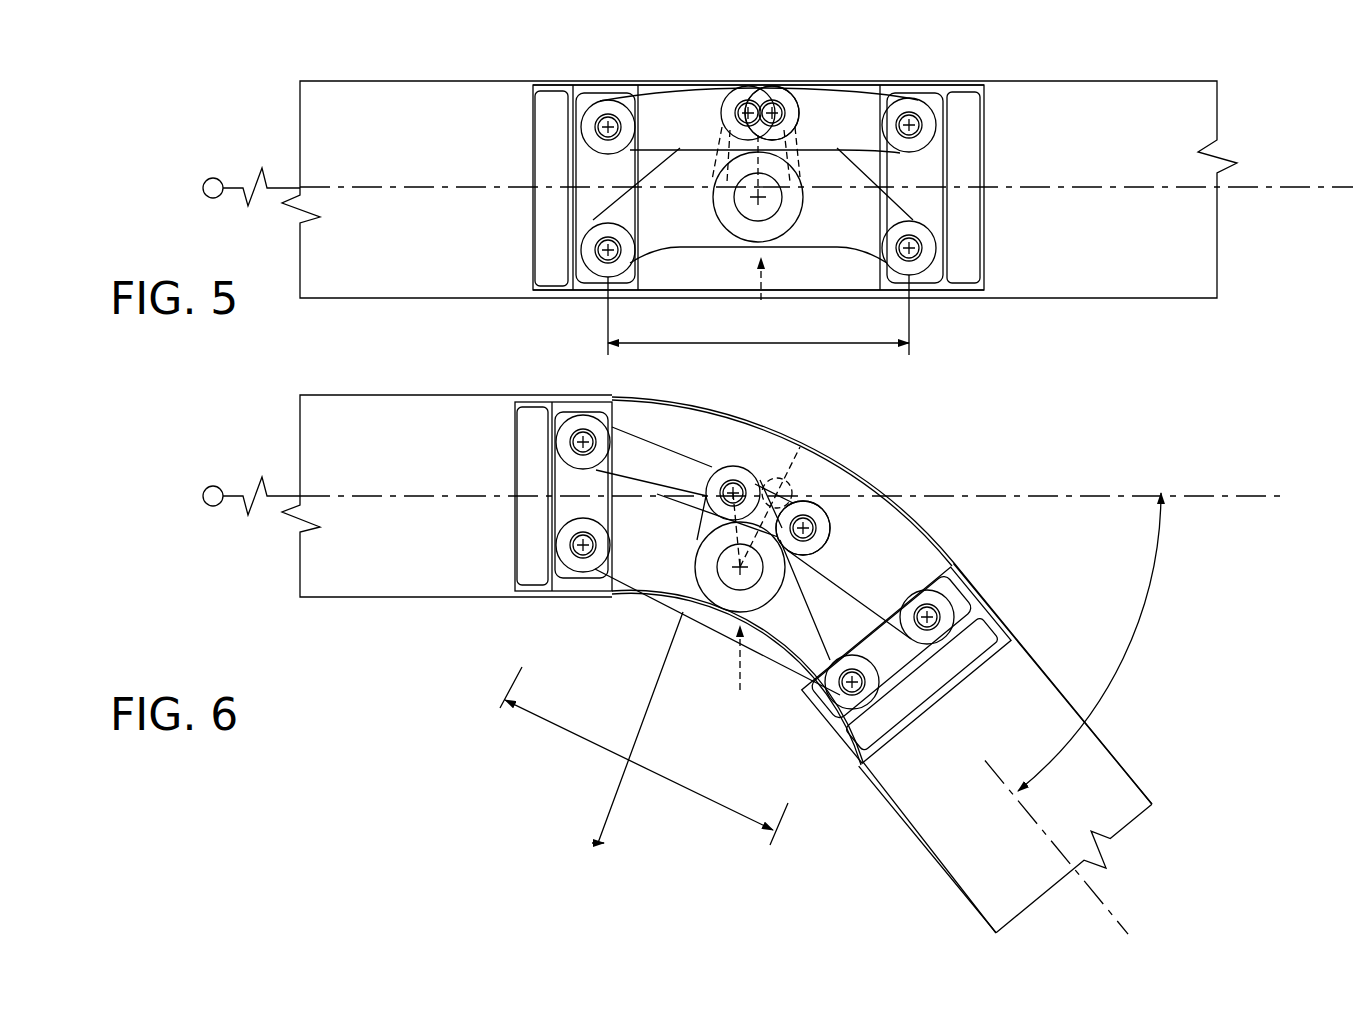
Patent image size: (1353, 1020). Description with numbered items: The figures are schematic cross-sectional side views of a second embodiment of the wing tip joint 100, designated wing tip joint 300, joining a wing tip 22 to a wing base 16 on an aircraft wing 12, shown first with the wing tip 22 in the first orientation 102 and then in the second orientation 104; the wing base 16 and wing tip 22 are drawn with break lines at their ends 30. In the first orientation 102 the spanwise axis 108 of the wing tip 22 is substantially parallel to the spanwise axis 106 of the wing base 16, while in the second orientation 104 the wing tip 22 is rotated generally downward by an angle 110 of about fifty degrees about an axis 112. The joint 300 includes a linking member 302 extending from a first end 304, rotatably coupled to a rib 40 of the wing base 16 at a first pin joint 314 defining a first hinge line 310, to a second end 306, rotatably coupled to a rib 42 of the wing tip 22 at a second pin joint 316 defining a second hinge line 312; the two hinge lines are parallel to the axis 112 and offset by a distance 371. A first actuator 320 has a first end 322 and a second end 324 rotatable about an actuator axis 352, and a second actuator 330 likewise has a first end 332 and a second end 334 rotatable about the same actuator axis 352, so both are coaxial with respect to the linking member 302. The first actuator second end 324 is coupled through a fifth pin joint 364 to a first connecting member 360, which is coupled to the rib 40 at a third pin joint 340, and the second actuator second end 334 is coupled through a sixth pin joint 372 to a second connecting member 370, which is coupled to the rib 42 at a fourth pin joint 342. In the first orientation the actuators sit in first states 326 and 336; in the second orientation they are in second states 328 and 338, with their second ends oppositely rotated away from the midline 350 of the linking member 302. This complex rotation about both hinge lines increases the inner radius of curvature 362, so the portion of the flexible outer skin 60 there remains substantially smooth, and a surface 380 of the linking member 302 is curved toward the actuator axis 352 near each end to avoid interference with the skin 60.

In FIG. 5, the tubular frame assembly 12 is at (283, 323).
In FIG. 6, the tubular frame assembly 12 is at (283, 623).
In FIG. 5, the wing base 16 is at (400, 80).
In FIG. 6, the wing base 16 is at (400, 395).
In FIG. 5, the wing tip 22 is at (1145, 80).
In FIG. 6, the wing tip 22 is at (1045, 680).
In FIG. 5, the tube end 30 is at (209, 178).
In FIG. 6, the tube end 30 is at (209, 486).
In FIG. 5, the rib 40 is at (640, 116).
In FIG. 6, the rib 40 is at (612, 412).
In FIG. 5, the rib 42 is at (872, 95).
In FIG. 6, the rib 42 is at (935, 567).
In FIG. 5, the flexible outer skin 60 is at (748, 82).
In FIG. 6, the flexible outer skin 60 is at (866, 484).
In FIG. 5, the wing tip joint 100 is at (766, 200).
In FIG. 6, the wing tip joint 100 is at (803, 650).
In FIG. 5, the first orientation 102 is at (1238, 325).
In FIG. 6, the second orientation 104 is at (1199, 771).
In FIG. 5, the spanwise axis 106 is at (410, 187).
In FIG. 6, the spanwise axis 106 is at (428, 495).
In FIG. 5, the spanwise axis 108 is at (1318, 187).
In FIG. 6, the spanwise axis 108 is at (1118, 913).
In FIG. 6, the angle 110 is at (1168, 515).
In FIG. 6, the axis 112 is at (786, 478).
In FIG. 5, the wing tip joint 300 is at (945, 58).
In FIG. 6, the wing tip joint 300 is at (560, 775).
In FIG. 5, the linking member 302 is at (703, 258).
In FIG. 6, the linking member 302 is at (650, 617).
In FIG. 5, the first end 304 is at (550, 289).
In FIG. 6, the first end 304 is at (527, 587).
In FIG. 5, the second end 306 is at (939, 279).
In FIG. 6, the second end 306 is at (788, 717).
In FIG. 5, the first hinge line 310 is at (550, 278).
In FIG. 6, the first hinge line 310 is at (527, 574).
In FIG. 5, the second hinge line 312 is at (969, 278).
In FIG. 6, the second hinge line 312 is at (788, 702).
In FIG. 5, the first pin joint 314 is at (603, 262).
In FIG. 6, the first pin joint 314 is at (576, 562).
In FIG. 5, the second pin joint 316 is at (900, 280).
In FIG. 6, the second pin joint 316 is at (845, 720).
In FIG. 5, the first actuator 320 is at (722, 130).
In FIG. 6, the first actuator 320 is at (779, 480).
In FIG. 5, the first end 322 is at (751, 256).
In FIG. 6, the first end 322 is at (699, 606).
In FIG. 5, the second end 324 is at (715, 95).
In FIG. 6, the second end 324 is at (744, 455).
In FIG. 5, the first state 326 is at (723, 95).
In FIG. 6, the second state 328 is at (733, 452).
In FIG. 5, the second actuator 330 is at (790, 92).
In FIG. 6, the second actuator 330 is at (809, 488).
In FIG. 5, the first end 332 is at (762, 298).
In FIG. 6, the first end 332 is at (737, 692).
In FIG. 5, the second end 334 is at (772, 82).
In FIG. 6, the second end 334 is at (833, 480).
In FIG. 5, the first state 336 is at (786, 82).
In FIG. 6, the second state 338 is at (828, 486).
In FIG. 5, the third pin joint 340 is at (603, 118).
In FIG. 6, the third pin joint 340 is at (578, 430).
In FIG. 5, the fourth pin joint 342 is at (915, 118).
In FIG. 6, the fourth pin joint 342 is at (943, 600).
In FIG. 5, the midline 350 is at (760, 200).
In FIG. 6, the midline 350 is at (815, 490).
In FIG. 5, the actuator axis 352 is at (790, 235).
In FIG. 6, the actuator axis 352 is at (760, 613).
In FIG. 5, the first connecting member 360 is at (660, 92).
In FIG. 6, the first connecting member 360 is at (658, 437).
In FIG. 6, the inner radius of curvature 362 is at (653, 690).
In FIG. 6, the fifth pin joint 364 is at (735, 455).
In FIG. 5, the second connecting member 370 is at (850, 92).
In FIG. 6, the second connecting member 370 is at (905, 562).
In FIG. 5, the distance 371 is at (905, 346).
In FIG. 6, the distance 371 is at (722, 812).
In FIG. 6, the sixth pin joint 372 is at (862, 492).
In FIG. 5, the surface 380 is at (725, 255).
In FIG. 6, the surface 380 is at (800, 664).